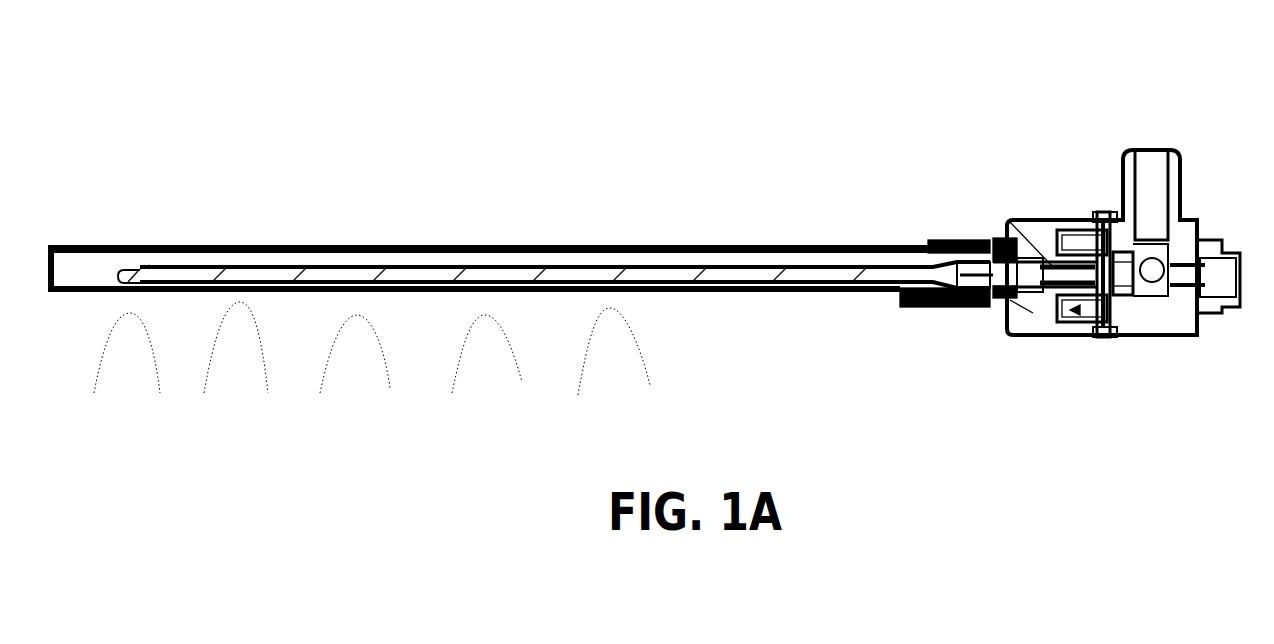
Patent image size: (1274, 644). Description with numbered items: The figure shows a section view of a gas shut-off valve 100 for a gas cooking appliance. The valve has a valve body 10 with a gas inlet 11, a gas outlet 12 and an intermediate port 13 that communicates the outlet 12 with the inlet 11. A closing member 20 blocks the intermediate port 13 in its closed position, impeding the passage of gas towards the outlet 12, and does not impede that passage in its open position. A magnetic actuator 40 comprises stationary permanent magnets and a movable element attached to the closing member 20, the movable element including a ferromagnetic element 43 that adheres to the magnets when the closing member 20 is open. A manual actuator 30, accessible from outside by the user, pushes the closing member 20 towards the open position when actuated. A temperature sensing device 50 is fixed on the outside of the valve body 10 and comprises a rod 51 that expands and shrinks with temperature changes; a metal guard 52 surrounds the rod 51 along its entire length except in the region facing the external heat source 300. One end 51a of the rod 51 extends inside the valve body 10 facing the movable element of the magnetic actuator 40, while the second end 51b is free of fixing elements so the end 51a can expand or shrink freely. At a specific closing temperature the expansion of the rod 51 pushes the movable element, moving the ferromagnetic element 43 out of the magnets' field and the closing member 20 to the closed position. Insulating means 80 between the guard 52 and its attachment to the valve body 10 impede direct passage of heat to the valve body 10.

The gas shut-off valve 100 is at (750, 121).
The temperature sensing device 50 is at (462, 223).
The metal guard 52 is at (680, 245).
The rod 51 is at (359, 268).
The end of the rod 51a is at (967, 240).
The second end of the rod 51b is at (125, 266).
The insulating means 80 is at (1007, 243).
The valve body 10 is at (1032, 334).
The gas inlet 11 is at (1148, 178).
The gas outlet 12 is at (1170, 250).
The intermediate port 13 is at (1137, 298).
The closing member 20 is at (1105, 212).
The manual actuator 30 is at (1233, 314).
The magnetic actuator 40 is at (1073, 307).
The ferromagnetic element 43 is at (1075, 250).
The external heat source 300 is at (683, 363).